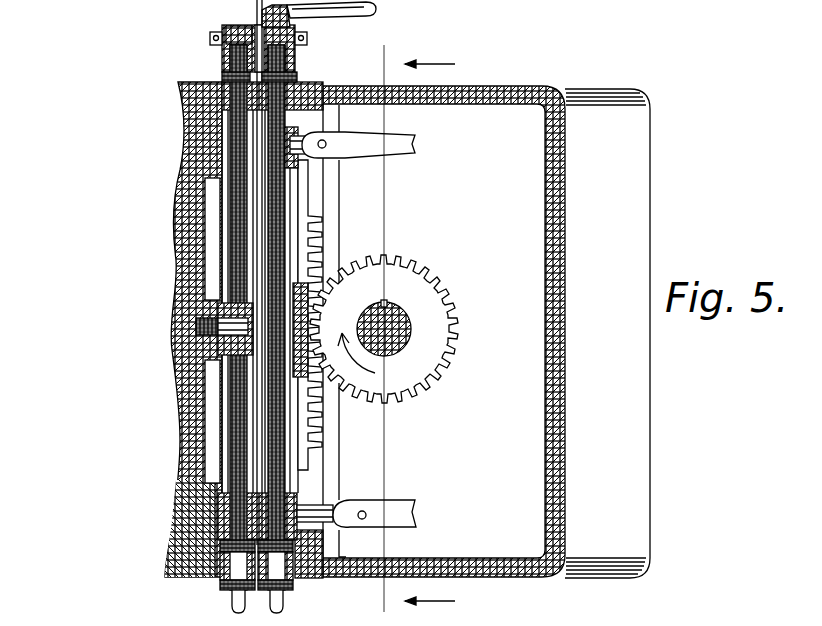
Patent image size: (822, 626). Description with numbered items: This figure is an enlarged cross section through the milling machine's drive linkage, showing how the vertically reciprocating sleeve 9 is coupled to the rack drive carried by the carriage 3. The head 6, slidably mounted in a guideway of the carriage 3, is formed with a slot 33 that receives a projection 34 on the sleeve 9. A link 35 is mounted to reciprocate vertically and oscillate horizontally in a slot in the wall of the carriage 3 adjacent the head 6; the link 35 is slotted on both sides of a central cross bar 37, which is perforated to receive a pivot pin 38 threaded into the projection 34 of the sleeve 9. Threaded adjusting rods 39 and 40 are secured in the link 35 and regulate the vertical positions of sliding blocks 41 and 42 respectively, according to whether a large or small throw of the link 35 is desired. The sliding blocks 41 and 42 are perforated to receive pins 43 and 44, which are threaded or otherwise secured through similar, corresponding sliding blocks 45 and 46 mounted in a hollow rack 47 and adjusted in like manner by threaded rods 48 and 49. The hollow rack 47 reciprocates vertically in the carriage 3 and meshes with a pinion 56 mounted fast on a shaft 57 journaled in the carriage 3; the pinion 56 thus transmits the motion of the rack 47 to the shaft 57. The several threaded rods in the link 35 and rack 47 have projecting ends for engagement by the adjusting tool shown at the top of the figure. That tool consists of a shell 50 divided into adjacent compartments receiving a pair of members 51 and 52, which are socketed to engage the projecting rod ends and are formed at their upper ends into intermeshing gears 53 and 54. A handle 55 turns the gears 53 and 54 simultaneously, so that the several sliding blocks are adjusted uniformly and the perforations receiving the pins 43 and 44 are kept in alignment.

The carriage 3 is at (516, 88).
The head 6 is at (200, 603).
The sleeve 9 is at (184, 528).
The slot 33 is at (213, 198).
The projection 34 is at (216, 307).
The link 35 is at (224, 82).
The central cross bar 37 is at (230, 362).
The pivot pin 38 is at (205, 327).
The threaded adjusting rod 39 is at (236, 225).
The threaded adjusting rod 40 is at (235, 419).
The sliding block 41 is at (224, 140).
The sliding block 42 is at (228, 500).
The pin 43 is at (337, 160).
The pin 44 is at (352, 507).
The sliding block 45 is at (300, 178).
The sliding block 46 is at (302, 505).
The hollow rack 47 is at (310, 438).
The threaded rod 48 is at (284, 250).
The threaded rod 49 is at (292, 463).
The shell 50 is at (297, 56).
The socketed member 51 is at (210, 37).
The socketed member 52 is at (290, 21).
The intermeshing gear 53 is at (232, 27).
The intermeshing gear 54 is at (259, 28).
The handle 55 is at (378, 10).
The pinion 56 is at (428, 319).
The shaft 57 is at (398, 343).